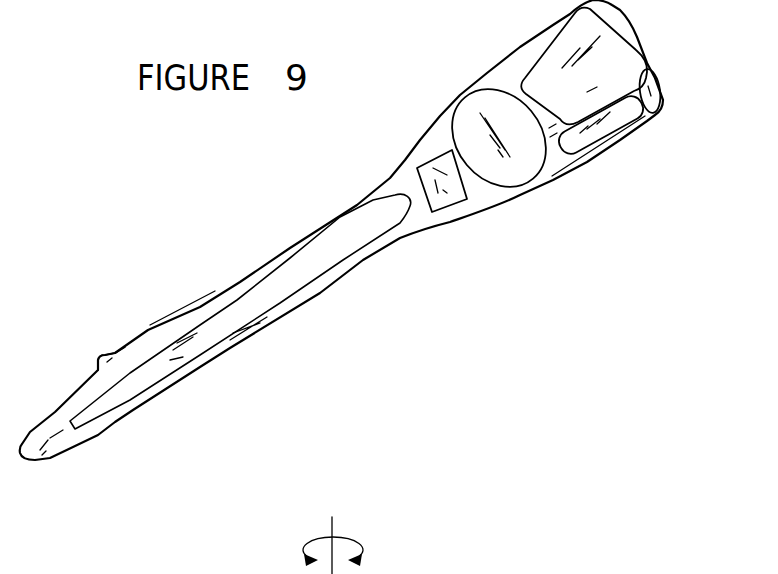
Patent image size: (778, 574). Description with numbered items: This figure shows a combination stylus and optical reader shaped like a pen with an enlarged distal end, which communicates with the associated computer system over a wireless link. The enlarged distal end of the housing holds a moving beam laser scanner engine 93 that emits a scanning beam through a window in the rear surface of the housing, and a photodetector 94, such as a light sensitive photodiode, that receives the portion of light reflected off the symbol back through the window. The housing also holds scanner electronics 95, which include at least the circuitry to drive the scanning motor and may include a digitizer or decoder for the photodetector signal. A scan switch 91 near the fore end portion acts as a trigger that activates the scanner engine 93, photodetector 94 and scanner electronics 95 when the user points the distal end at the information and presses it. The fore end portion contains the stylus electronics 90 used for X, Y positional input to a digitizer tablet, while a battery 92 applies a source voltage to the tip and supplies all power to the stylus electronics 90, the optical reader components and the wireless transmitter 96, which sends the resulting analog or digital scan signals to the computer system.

The stylus electronics 90 is at (134, 408).
The scan switch 91 is at (148, 332).
The battery 92 is at (427, 167).
The moving beam laser scanner engine 93 is at (550, 63).
The photodetector 94 is at (657, 82).
The scanner electronics 95 is at (613, 122).
The wireless transmitter 96 is at (530, 153).